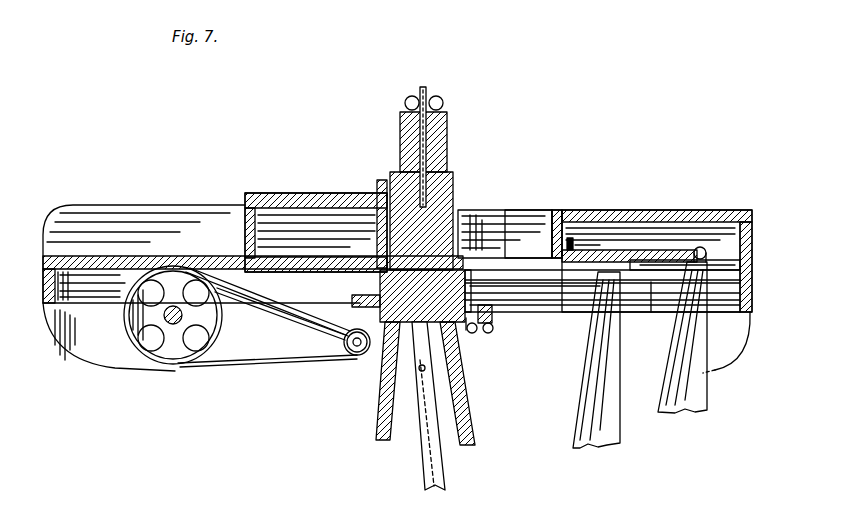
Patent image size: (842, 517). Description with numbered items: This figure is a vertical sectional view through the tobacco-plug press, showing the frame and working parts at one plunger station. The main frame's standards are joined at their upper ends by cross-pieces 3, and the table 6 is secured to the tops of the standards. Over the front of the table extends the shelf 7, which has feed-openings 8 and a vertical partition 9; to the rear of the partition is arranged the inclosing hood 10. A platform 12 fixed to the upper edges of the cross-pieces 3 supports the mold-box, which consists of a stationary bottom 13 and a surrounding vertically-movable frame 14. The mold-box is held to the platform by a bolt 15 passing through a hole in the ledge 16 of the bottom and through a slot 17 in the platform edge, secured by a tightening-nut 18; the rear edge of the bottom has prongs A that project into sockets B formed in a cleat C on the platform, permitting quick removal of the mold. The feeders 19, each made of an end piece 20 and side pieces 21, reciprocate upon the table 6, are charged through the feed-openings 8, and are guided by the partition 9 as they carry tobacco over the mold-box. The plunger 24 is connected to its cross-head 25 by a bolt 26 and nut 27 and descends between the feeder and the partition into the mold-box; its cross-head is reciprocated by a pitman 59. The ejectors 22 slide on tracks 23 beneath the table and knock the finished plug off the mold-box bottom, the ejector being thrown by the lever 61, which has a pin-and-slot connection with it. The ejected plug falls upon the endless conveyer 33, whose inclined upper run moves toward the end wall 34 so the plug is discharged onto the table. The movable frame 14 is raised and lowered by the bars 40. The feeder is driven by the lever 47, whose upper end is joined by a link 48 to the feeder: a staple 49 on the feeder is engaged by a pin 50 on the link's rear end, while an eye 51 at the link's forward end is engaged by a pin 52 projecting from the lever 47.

The cross-pieces 3 is at (378, 416).
The table 6 is at (122, 259).
The shelf 7 is at (622, 216).
The feed-openings 8 is at (565, 216).
The vertical partition 9 is at (380, 190).
The inclosing hood 10 is at (285, 197).
The platform 12 is at (348, 353).
The stationary bottom 13 is at (356, 358).
The vertically-movable frame 14 is at (313, 316).
The bolt 15 is at (490, 326).
The ledge 16 is at (474, 334).
The slot 17 is at (475, 330).
The tightening-nut 18 is at (492, 334).
The feeders 19 is at (508, 228).
The end piece 20 is at (556, 210).
The side pieces 21 is at (480, 216).
The ejectors 22 is at (500, 313).
The tracks 23 is at (651, 313).
The plungers 24 is at (456, 183).
The cross-heads 25 is at (448, 114).
The bolt 26 is at (412, 116).
The nut 27 is at (432, 95).
The endless apron or conveyer 33 is at (262, 304).
The end wall 34 is at (245, 362).
The bars 40 is at (420, 472).
The lever 47 is at (682, 398).
The link 48 is at (660, 256).
The staple 49 is at (580, 246).
The pin 50 is at (572, 240).
The eye 51 is at (745, 228).
The pin 52 is at (706, 248).
The pitmen 59 is at (436, 470).
The lever 61 is at (596, 422).
The points or prongs A is at (332, 356).
The sockets B is at (320, 352).
The cleat C is at (358, 294).